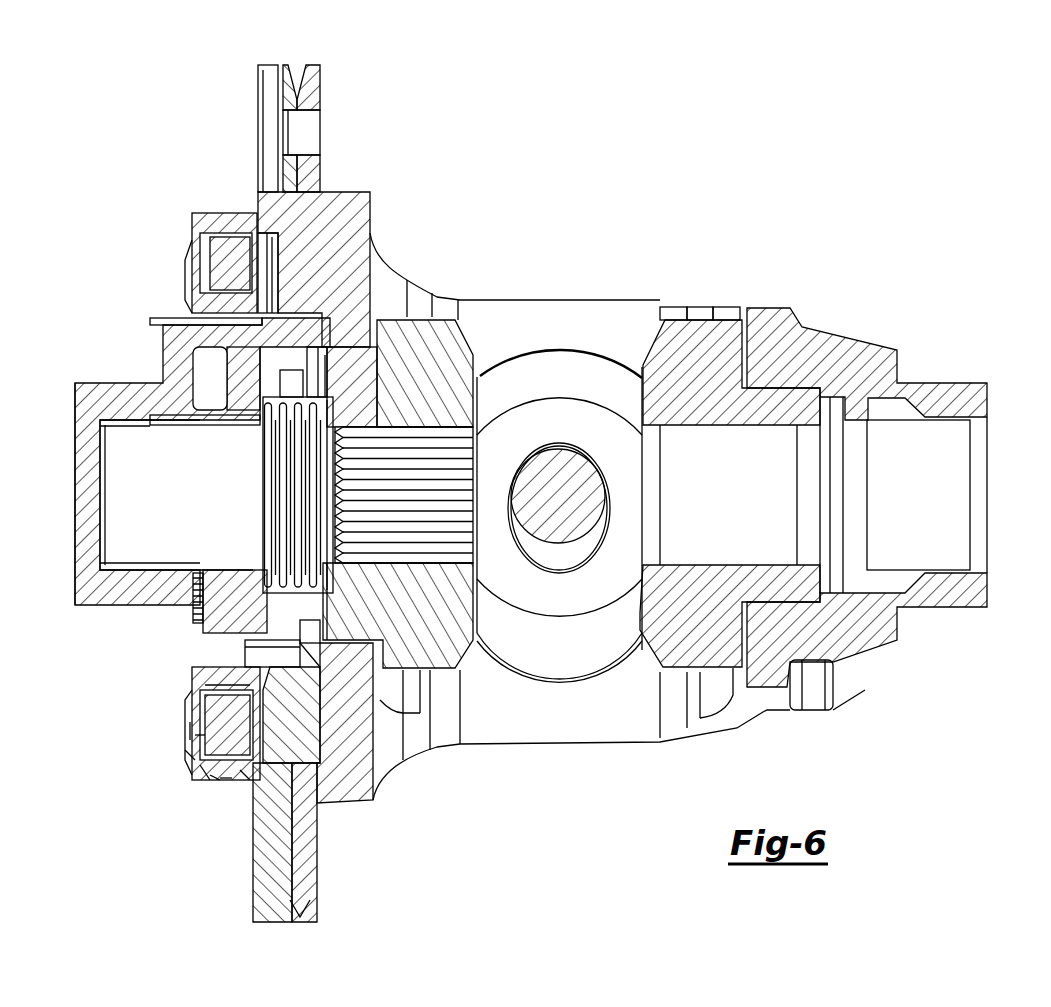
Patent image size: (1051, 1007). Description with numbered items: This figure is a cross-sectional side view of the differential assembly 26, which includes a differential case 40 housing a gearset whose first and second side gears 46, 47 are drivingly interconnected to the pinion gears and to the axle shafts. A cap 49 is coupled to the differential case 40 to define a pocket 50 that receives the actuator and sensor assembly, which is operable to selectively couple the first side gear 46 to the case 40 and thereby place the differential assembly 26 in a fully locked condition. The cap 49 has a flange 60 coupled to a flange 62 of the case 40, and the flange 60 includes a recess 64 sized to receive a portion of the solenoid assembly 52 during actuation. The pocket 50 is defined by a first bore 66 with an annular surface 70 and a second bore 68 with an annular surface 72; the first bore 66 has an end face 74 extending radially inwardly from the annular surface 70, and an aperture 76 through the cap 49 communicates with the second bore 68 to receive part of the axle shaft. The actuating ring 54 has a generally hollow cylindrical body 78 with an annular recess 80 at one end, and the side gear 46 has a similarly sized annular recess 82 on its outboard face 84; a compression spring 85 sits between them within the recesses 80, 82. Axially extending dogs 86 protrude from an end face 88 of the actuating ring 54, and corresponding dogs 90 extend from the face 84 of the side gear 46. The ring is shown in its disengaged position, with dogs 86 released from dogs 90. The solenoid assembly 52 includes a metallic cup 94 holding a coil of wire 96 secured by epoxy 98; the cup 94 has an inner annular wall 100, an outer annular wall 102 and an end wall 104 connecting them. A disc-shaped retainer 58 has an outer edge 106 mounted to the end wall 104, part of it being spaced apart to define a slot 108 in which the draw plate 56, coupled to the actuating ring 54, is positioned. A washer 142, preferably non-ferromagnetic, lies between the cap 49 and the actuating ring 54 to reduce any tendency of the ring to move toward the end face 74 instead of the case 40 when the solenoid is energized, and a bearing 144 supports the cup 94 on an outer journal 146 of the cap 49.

The differential assembly 26 is at (565, 258).
The differential case 40 is at (775, 310).
The first side gear 46 is at (438, 328).
The second side gear 47 is at (700, 325).
The cap 49 is at (78, 370).
The pocket 50 is at (302, 350).
The solenoid assembly 52 is at (190, 210).
The actuating ring 54 is at (238, 380).
The draw plate 56 is at (187, 690).
The retainer 58 is at (187, 760).
The flange 60 is at (287, 83).
The flange 62 is at (308, 78).
The recess 64 is at (266, 222).
The first bore 66 is at (323, 643).
The second bore 68 is at (133, 570).
The annular surface 70 is at (283, 660).
The annular surface 72 is at (143, 570).
The end face 74 is at (198, 412).
The aperture 76 is at (76, 412).
The hollow cylindrical body 78 is at (230, 592).
The annular recess 80 is at (270, 570).
The annular recess 82 is at (318, 405).
The outboard face 84 is at (327, 357).
The compression spring 85 is at (333, 422).
The dogs 86 is at (280, 385).
The end face 88 is at (284, 356).
The dogs 90 is at (317, 352).
The metallic cup 94 is at (210, 780).
The coil of wire 96 is at (235, 727).
The epoxy 98 is at (226, 781).
The inner annular wall 100 is at (215, 690).
The outer annular wall 102 is at (246, 782).
The end wall 104 is at (193, 740).
The outer edge 106 is at (203, 772).
The slot 108 is at (192, 730).
The washer 142 is at (193, 600).
The bearing 144 is at (213, 310).
The outer journal 146 is at (265, 308).